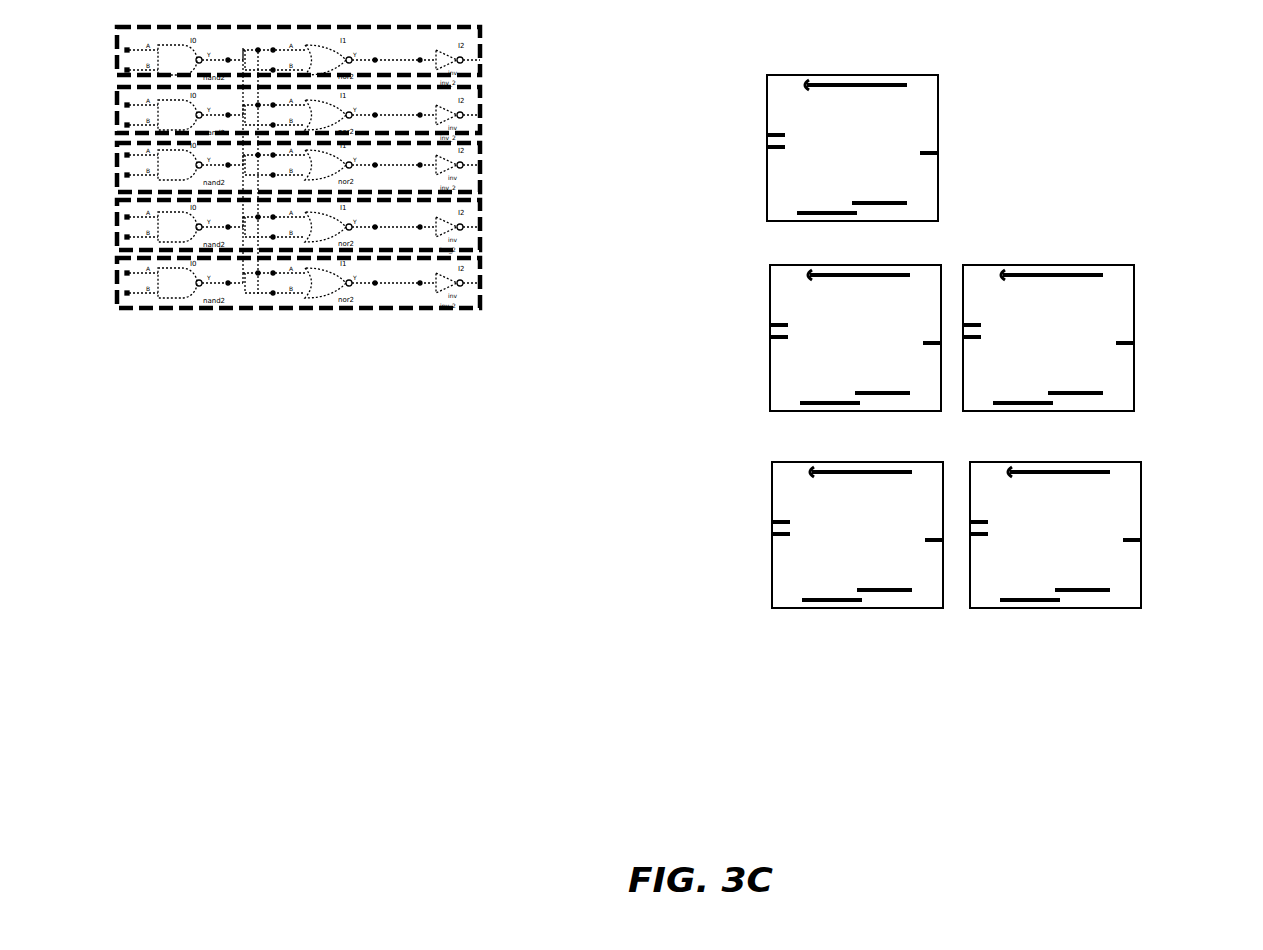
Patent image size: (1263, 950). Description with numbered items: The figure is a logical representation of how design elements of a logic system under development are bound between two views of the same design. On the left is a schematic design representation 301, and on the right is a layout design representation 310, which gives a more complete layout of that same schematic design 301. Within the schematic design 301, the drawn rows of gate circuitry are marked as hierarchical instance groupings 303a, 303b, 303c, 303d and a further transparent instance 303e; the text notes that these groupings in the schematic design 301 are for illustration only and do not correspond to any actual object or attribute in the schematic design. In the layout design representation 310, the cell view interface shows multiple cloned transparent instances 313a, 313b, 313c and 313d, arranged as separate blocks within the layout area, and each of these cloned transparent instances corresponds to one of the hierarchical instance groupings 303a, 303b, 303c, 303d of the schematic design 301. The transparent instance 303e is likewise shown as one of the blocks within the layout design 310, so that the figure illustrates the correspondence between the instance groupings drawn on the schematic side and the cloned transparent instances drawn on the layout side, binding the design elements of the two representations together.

The schematic design representation 301 is at (356, 414).
The hierarchical instance grouping 303a is at (245, 321).
The hierarchical instance grouping 303b is at (463, 270).
The hierarchical instance grouping 303c is at (459, 210).
The hierarchical instance grouping 303d is at (458, 98).
The transparent instance 303e is at (463, 40).
The layout design representation 310 is at (893, 436).
The cloned transparent instance 313a is at (1063, 609).
The cloned transparent instance 313b is at (862, 609).
The cloned transparent instance 313c is at (771, 396).
The cloned transparent instance 313d is at (769, 216).